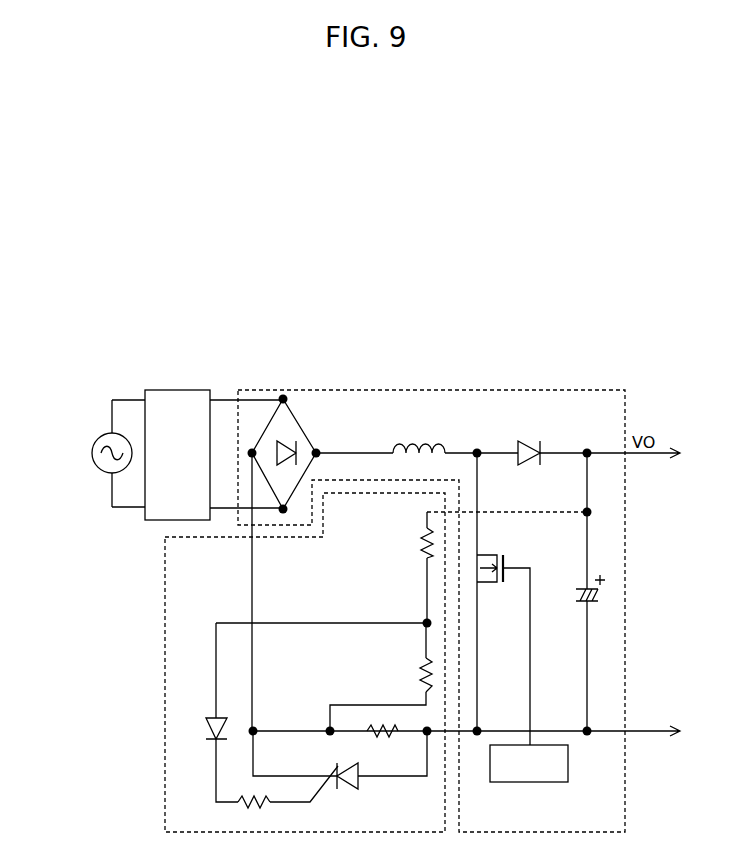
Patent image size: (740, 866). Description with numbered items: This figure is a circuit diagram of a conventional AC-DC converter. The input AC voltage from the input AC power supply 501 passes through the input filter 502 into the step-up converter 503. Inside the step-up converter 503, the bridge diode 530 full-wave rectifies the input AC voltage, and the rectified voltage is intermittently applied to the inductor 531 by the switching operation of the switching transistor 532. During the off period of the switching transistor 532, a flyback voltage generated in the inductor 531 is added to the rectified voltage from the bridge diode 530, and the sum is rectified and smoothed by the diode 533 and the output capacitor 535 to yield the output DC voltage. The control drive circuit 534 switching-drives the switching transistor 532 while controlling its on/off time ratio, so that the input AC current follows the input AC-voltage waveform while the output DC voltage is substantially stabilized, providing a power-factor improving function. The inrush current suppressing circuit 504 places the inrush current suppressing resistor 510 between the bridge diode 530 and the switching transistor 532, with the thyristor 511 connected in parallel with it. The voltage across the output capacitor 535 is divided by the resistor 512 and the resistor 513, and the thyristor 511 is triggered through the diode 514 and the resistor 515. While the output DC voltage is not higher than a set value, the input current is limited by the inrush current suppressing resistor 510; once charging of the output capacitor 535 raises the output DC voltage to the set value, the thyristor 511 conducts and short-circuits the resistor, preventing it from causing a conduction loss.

The input AC power supply 501 is at (91, 437).
The input filter 502 is at (172, 389).
The step-up converter 503 is at (627, 408).
The inrush current suppressing circuit 504 is at (163, 565).
The inrush current suppressing resistor 510 is at (398, 730).
The thyristor 511 is at (359, 779).
The resistor 512 is at (423, 556).
The resistor 513 is at (421, 663).
The diode 514 is at (211, 716).
The resistor 515 is at (267, 806).
The bridge diode 530 is at (303, 424).
The inductor 531 is at (445, 441).
The switching transistor 532 is at (508, 558).
The diode 533 is at (527, 440).
The control drive circuit 534 is at (520, 784).
The output capacitor 535 is at (578, 604).